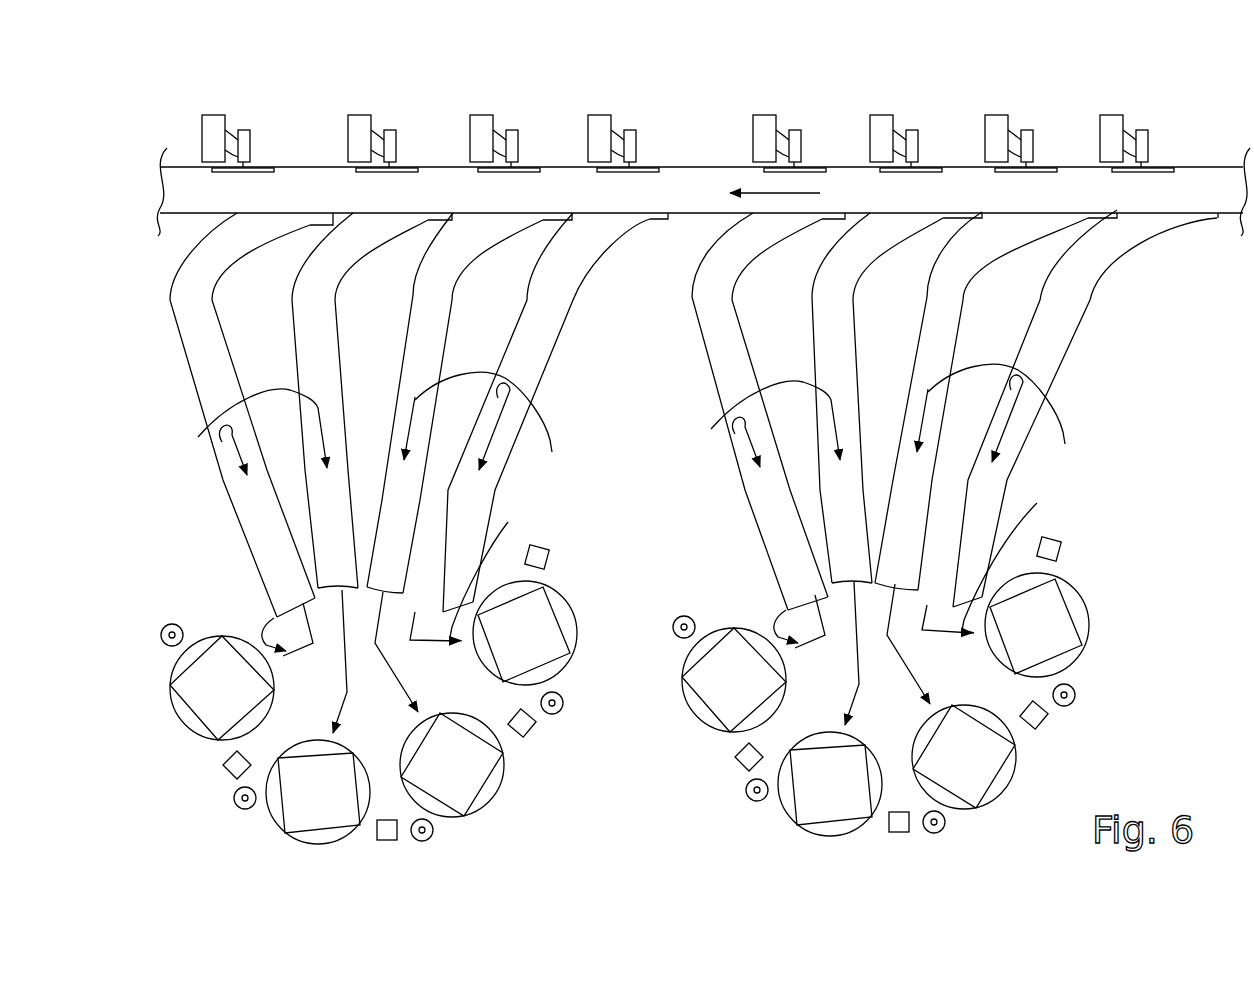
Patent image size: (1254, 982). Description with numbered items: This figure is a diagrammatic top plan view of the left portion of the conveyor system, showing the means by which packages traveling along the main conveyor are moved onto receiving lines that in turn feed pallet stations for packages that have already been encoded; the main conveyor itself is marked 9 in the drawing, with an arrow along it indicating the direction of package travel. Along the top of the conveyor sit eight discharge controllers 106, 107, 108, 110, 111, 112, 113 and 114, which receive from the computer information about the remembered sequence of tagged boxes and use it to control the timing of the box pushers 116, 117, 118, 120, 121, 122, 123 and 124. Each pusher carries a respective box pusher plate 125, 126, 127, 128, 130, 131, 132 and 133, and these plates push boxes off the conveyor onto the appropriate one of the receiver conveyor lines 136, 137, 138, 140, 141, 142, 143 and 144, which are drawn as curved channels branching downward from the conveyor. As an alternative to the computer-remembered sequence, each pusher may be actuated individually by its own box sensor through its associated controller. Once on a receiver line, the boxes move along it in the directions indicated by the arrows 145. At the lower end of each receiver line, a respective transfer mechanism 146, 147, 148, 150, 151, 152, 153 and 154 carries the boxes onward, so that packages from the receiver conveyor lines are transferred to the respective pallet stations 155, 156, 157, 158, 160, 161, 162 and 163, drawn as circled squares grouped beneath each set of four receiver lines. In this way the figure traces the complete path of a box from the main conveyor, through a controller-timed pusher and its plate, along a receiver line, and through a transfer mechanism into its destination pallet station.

The conveyor transport direction 9 is at (745, 193).
The discharge controller 106 is at (1112, 120).
The discharge controller 107 is at (997, 120).
The discharge controller 108 is at (882, 120).
The discharge controller 110 is at (765, 120).
The discharge controller 111 is at (600, 120).
The discharge controller 112 is at (485, 120).
The discharge controller 113 is at (362, 120).
The discharge controller 114 is at (212, 122).
The box pusher 116 is at (1148, 150).
The box pusher 117 is at (1033, 150).
The box pusher 118 is at (918, 150).
The box pusher 120 is at (801, 150).
The box pusher 121 is at (636, 150).
The box pusher 122 is at (518, 150).
The box pusher 123 is at (396, 150).
The box pusher 124 is at (250, 150).
The box pusher plate 125 is at (1140, 173).
The box pusher plate 126 is at (1025, 173).
The box pusher plate 127 is at (910, 173).
The box pusher plate 128 is at (805, 173).
The box pusher plate 130 is at (610, 173).
The box pusher plate 131 is at (490, 173).
The box pusher plate 132 is at (365, 173).
The box pusher plate 133 is at (276, 173).
The receiver conveyor line 136 is at (1068, 315).
The receiver conveyor line 137 is at (960, 308).
The receiver conveyor line 138 is at (835, 313).
The receiver conveyor line 140 is at (718, 323).
The receiver conveyor line 141 is at (538, 345).
The receiver conveyor line 142 is at (432, 325).
The receiver conveyor line 143 is at (320, 327).
The receiver conveyor line 144 is at (200, 327).
The arrows 145 is at (649, 420).
The transfer mechanism 146 is at (1000, 561).
The transfer mechanism 147 is at (910, 680).
The transfer mechanism 148 is at (856, 690).
The transfer mechanism 150 is at (778, 622).
The transfer mechanism 151 is at (479, 574).
The transfer mechanism 152 is at (400, 682).
The transfer mechanism 153 is at (340, 720).
The transfer mechanism 154 is at (263, 628).
The pallet station 155 is at (1090, 612).
The pallet station 156 is at (1018, 770).
The pallet station 157 is at (822, 828).
The pallet station 158 is at (705, 705).
The pallet station 160 is at (560, 617).
The pallet station 161 is at (500, 790).
The pallet station 162 is at (275, 820).
The pallet station 163 is at (180, 718).